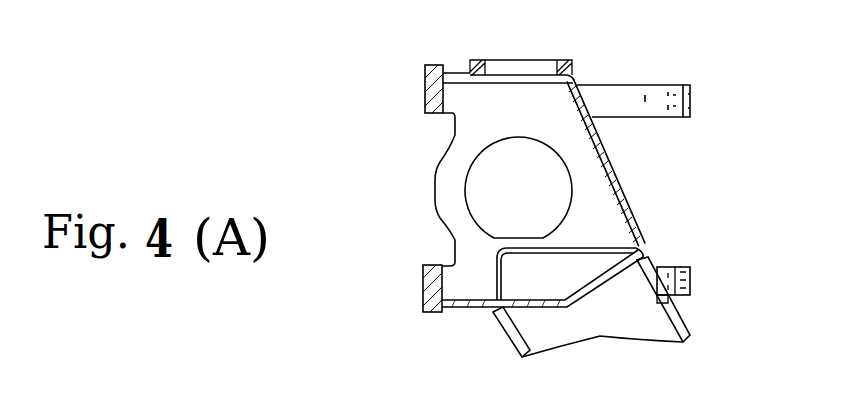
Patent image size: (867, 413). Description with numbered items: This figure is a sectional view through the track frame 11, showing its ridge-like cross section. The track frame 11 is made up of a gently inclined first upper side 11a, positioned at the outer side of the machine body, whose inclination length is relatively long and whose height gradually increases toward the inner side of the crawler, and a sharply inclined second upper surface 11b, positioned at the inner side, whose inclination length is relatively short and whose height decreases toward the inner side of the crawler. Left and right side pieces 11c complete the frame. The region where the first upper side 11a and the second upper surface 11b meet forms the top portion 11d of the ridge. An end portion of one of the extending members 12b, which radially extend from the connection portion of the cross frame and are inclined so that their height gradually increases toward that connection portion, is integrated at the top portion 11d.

The track frame 11 is at (646, 66).
The first upper side 11a is at (613, 178).
The second upper surface 11b is at (610, 283).
The side pieces 11c is at (457, 72).
The top portion 11d is at (643, 248).
The extending members 12b is at (680, 323).